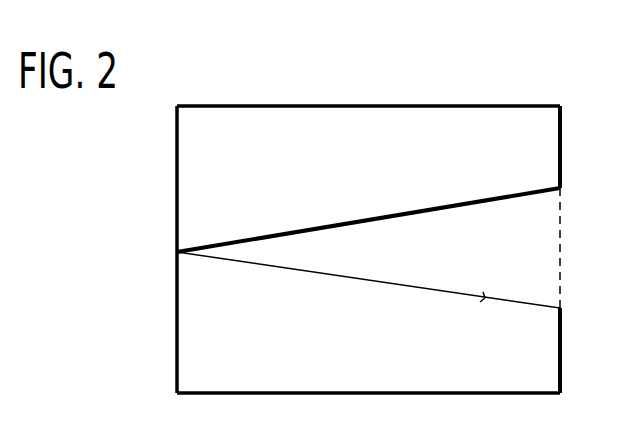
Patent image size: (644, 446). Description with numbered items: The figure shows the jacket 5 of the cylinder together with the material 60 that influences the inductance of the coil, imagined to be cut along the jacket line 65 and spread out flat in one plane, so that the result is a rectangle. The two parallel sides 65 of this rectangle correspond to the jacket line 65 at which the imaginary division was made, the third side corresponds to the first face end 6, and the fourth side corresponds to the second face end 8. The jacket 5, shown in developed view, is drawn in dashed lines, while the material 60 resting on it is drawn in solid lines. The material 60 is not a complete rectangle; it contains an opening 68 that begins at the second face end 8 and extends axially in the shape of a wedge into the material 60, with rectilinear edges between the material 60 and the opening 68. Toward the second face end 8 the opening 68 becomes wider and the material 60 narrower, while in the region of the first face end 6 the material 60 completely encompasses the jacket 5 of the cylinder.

The jacket line 65 is at (405, 106).
The material influencing the inductance 60 is at (251, 160).
The jacket 5 is at (561, 212).
The second face end 8 is at (561, 340).
The opening 68 is at (517, 273).
The first face end 6 is at (177, 309).